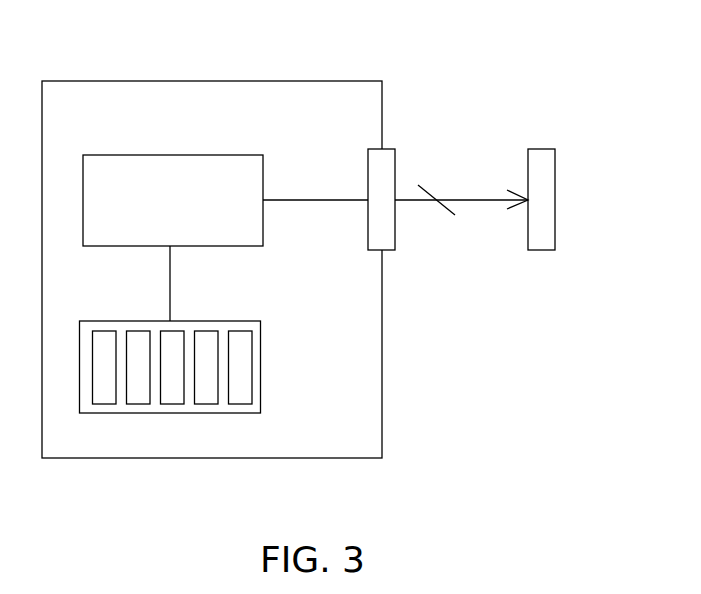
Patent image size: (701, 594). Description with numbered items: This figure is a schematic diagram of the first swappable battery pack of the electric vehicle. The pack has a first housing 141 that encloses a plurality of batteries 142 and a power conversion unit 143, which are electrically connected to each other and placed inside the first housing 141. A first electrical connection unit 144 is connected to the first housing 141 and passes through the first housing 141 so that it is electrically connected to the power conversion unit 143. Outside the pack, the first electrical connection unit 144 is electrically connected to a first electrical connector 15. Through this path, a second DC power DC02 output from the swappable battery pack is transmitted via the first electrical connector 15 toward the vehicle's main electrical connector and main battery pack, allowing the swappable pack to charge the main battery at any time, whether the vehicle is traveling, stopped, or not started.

The first housing 141 is at (288, 81).
The power conversion unit 143 is at (193, 155).
The batteries 142 is at (243, 331).
The first electrical connection unit 144 is at (388, 149).
The first electrical connector 15 is at (542, 149).
The second DC power DC02 is at (437, 200).